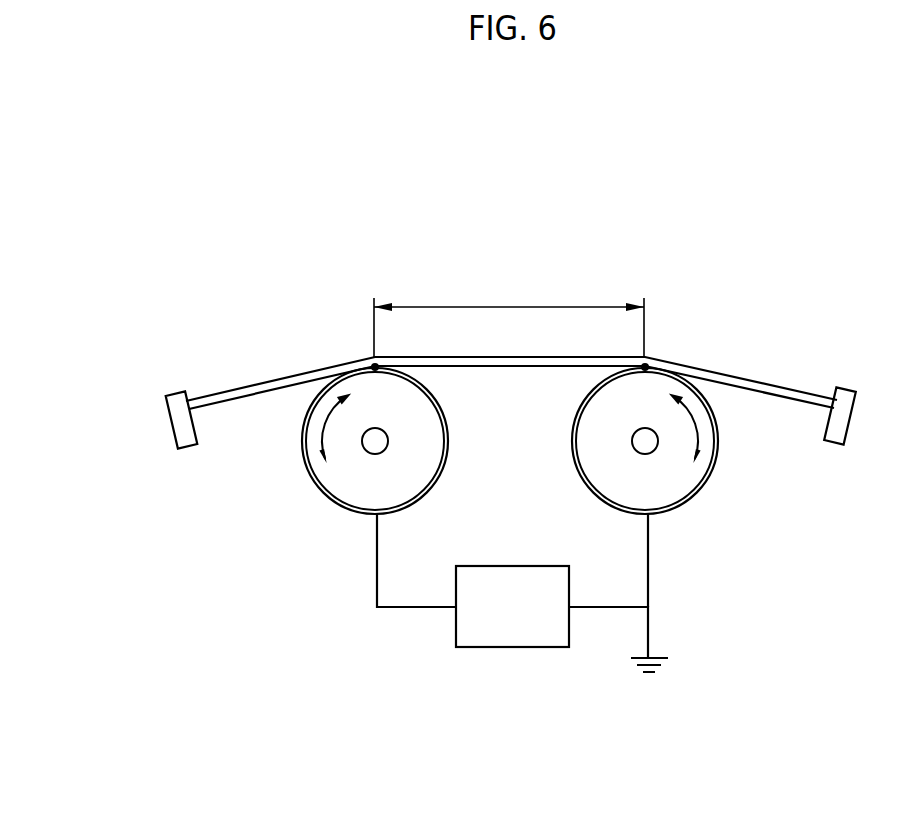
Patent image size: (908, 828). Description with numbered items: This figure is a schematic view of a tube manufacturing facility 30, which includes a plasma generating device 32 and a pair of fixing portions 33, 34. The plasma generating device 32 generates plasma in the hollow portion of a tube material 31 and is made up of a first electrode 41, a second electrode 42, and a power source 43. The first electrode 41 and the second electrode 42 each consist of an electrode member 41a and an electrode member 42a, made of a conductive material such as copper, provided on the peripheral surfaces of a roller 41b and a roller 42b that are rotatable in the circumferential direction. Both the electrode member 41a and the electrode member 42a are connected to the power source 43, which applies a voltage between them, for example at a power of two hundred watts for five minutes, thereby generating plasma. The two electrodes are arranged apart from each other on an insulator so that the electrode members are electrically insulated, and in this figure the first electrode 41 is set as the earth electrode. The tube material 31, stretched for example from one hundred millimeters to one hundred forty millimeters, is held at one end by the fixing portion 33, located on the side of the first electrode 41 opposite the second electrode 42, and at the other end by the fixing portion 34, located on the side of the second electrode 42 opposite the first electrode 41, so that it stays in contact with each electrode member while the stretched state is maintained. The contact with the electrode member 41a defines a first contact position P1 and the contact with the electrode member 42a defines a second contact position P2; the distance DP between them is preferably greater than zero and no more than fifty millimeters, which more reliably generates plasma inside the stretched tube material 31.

The tube manufacturing facility 30 is at (205, 633).
The tube material 31 is at (731, 373).
The plasma generating device 32 is at (507, 607).
The fixing portion 33 is at (846, 387).
The fixing portion 34 is at (174, 393).
The first electrode 41 is at (652, 460).
The electrode member 41a is at (690, 498).
The roller 41b is at (590, 456).
The second electrode 42 is at (371, 461).
The electrode member 42a is at (333, 503).
The roller 42b is at (432, 458).
The power source 43 is at (531, 648).
The first contact position P1 is at (649, 362).
The second contact position P2 is at (371, 362).
The distance DP is at (509, 314).